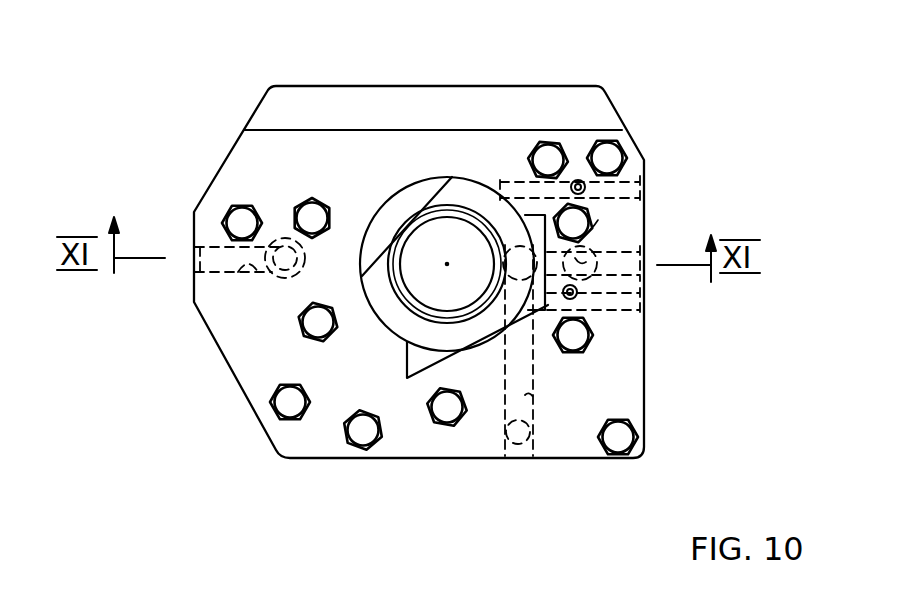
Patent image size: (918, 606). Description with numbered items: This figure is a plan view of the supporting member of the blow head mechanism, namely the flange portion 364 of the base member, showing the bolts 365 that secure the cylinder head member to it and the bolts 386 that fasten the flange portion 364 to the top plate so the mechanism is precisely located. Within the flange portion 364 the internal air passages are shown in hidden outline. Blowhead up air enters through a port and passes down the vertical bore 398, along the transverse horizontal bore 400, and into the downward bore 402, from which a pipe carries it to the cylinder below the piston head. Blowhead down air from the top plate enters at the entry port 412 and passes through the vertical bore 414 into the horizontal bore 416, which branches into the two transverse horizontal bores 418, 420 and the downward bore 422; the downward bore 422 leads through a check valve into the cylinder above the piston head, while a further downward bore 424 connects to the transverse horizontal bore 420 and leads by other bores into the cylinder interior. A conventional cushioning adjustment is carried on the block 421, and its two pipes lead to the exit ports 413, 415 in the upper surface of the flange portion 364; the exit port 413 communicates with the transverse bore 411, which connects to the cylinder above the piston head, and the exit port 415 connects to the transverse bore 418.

The flange portion 364 is at (310, 447).
The bolts 365 is at (318, 320).
The bolts 386 is at (355, 430).
The vertical bore 398 is at (217, 258).
The transverse horizontal bore 400 is at (247, 272).
The downward bore 402 is at (285, 282).
The transverse bore 411 is at (505, 190).
The entry port 412 is at (508, 462).
The exit port 413 is at (583, 180).
The vertical bore 414 is at (535, 440).
The exit port 415 is at (574, 296).
The horizontal bore 416 is at (530, 397).
The transverse horizontal bore 418 is at (648, 305).
The transverse horizontal bore 420 is at (648, 272).
The block 421 is at (592, 230).
The downward bore 422 is at (530, 322).
The downward bore 424 is at (622, 248).